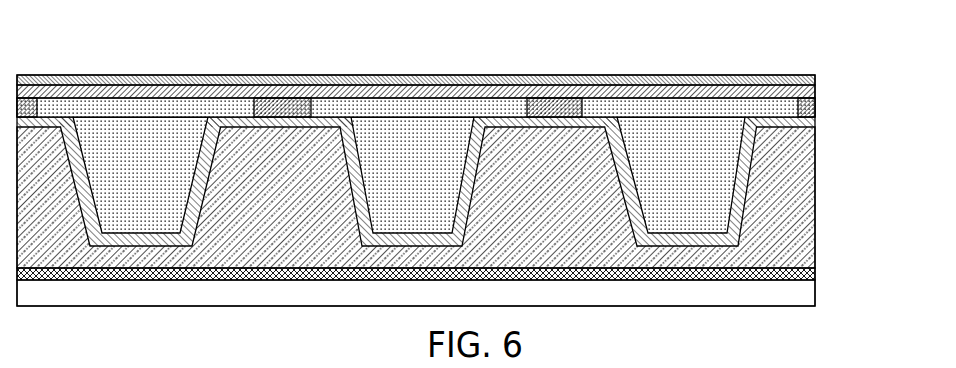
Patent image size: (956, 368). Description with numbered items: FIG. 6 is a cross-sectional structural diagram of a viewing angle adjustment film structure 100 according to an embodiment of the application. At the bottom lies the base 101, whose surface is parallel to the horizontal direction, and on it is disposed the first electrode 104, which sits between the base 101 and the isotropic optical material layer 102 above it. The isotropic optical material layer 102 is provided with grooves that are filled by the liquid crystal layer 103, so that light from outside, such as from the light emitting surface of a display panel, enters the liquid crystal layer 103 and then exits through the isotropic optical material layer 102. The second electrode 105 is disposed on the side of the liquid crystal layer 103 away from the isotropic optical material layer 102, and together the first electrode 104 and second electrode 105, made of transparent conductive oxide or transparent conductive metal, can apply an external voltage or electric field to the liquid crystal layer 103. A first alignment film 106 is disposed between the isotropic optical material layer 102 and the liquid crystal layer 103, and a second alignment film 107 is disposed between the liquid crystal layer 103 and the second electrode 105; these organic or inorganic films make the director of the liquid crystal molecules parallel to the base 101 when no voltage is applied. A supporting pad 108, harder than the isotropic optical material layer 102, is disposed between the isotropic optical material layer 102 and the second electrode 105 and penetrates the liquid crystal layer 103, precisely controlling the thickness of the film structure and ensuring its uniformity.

The viewing angle adjustment film structure 100 is at (73, 44).
The base 101 is at (815, 298).
The isotropic optical material layer 102 is at (815, 220).
The liquid crystal layer 103 is at (815, 106).
The first electrode 104 is at (815, 272).
The second electrode 105 is at (815, 76).
The first alignment film 106 is at (410, 208).
The second alignment film 107 is at (211, 77).
The supporting pad 108 is at (284, 101).